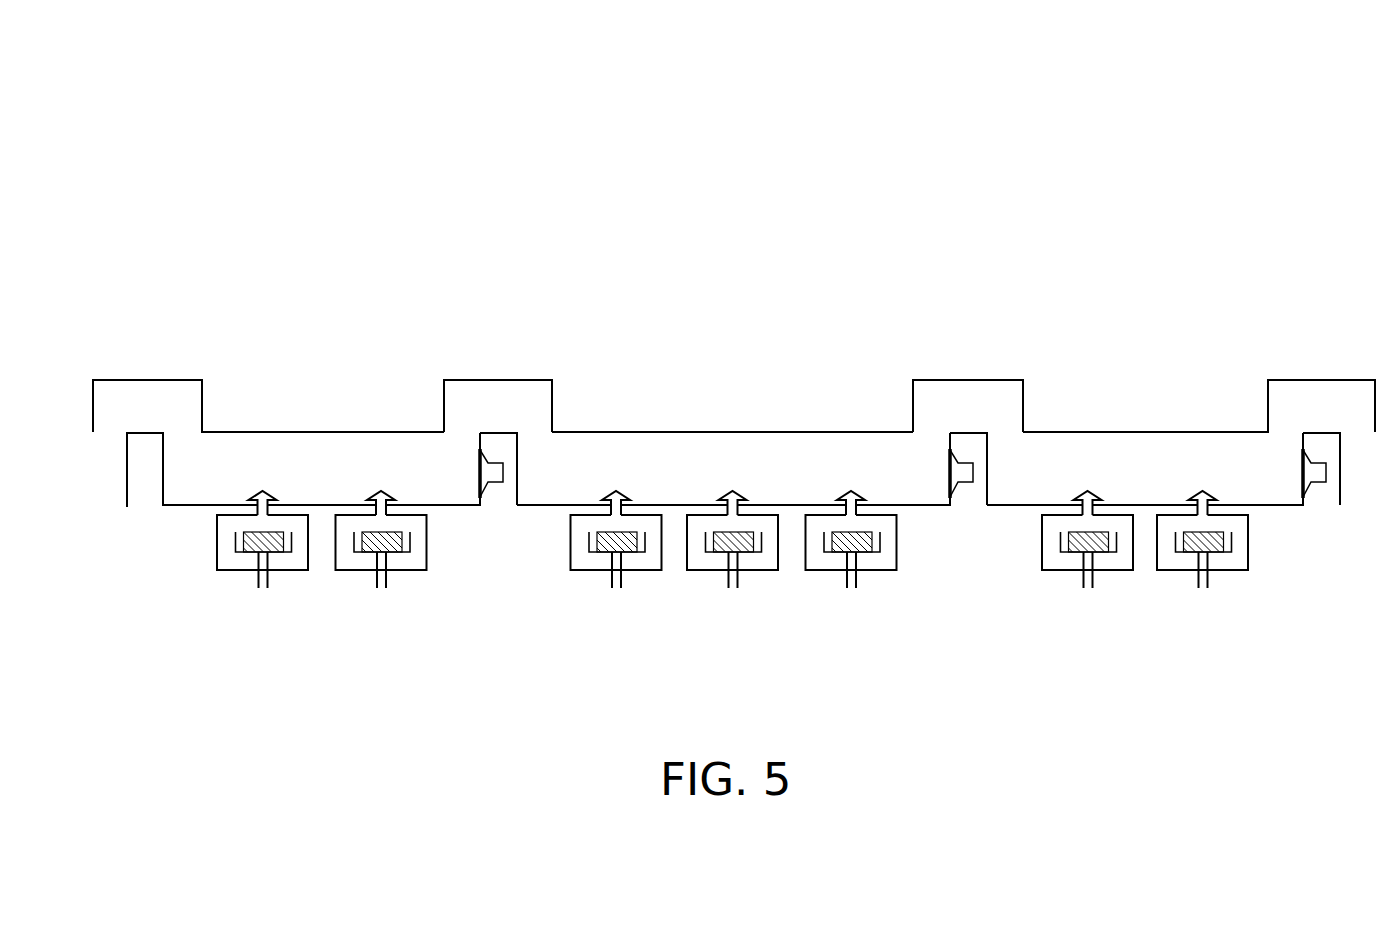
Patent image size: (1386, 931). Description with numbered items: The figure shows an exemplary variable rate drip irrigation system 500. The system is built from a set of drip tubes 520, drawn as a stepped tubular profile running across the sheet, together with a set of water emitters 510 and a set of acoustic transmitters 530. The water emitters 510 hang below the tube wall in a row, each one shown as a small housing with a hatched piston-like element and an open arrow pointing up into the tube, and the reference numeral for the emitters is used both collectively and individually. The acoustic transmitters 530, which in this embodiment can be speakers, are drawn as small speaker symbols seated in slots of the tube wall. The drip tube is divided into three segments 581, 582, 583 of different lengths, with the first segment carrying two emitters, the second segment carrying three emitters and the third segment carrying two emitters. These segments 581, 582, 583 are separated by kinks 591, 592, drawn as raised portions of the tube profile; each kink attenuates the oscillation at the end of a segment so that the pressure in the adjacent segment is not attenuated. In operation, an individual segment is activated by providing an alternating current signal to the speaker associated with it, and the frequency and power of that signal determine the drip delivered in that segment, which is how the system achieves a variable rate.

The variable rate drip irrigation system 500 is at (1116, 102).
The drip tube 520 is at (1246, 248).
The segment 581 is at (331, 350).
The segment 582 is at (747, 348).
The segment 583 is at (1176, 340).
The kink 591 is at (502, 329).
The kink 592 is at (965, 329).
The water emitter 510 is at (195, 543).
The acoustic transmitter 530 is at (493, 506).